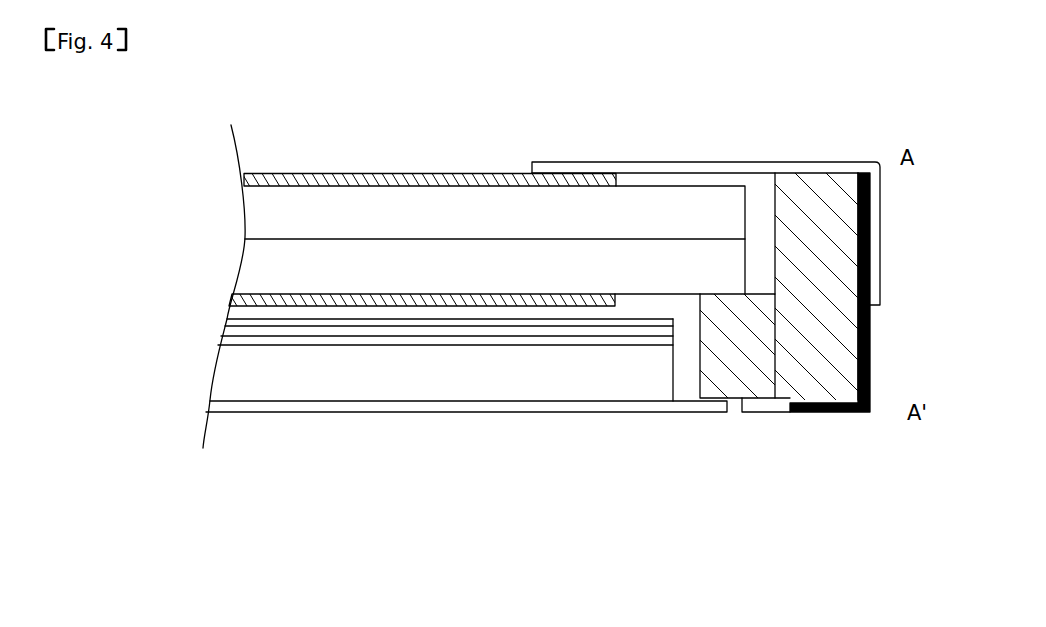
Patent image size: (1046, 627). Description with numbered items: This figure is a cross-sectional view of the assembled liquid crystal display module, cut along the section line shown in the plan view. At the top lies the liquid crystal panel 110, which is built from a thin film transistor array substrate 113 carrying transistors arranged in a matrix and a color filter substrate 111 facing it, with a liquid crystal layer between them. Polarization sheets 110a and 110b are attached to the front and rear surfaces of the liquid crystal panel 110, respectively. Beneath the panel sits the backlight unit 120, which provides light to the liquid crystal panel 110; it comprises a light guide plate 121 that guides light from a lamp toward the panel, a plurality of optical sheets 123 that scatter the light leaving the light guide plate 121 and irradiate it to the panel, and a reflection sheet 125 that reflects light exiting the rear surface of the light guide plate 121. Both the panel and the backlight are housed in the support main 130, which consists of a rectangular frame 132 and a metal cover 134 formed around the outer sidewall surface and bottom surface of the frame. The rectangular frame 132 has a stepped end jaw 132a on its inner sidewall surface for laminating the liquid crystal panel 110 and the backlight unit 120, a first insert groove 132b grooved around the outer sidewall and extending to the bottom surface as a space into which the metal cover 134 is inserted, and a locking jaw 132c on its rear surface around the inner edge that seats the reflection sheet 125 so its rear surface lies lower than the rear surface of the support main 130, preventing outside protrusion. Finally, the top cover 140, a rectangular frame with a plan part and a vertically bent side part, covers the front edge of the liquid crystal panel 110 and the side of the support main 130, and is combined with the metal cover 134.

The liquid crystal panel 110 is at (130, 168).
The polarization sheet 110a is at (447, 182).
The polarization sheet 110b is at (352, 300).
The color filter substrate 111 is at (253, 208).
The thin film transistor array substrate 113 is at (252, 263).
The backlight unit 120 is at (120, 300).
The light guide plate 121 is at (222, 368).
The optical sheets 123 is at (215, 342).
The reflection sheet 125 is at (217, 407).
The support main 130 is at (922, 543).
The rectangular frame 132 is at (875, 500).
The stepped end jaw 132a is at (770, 297).
The first insert groove 132b is at (857, 380).
The locking jaw 132c is at (738, 413).
The metal cover 134 is at (872, 403).
The top cover 140 is at (715, 170).